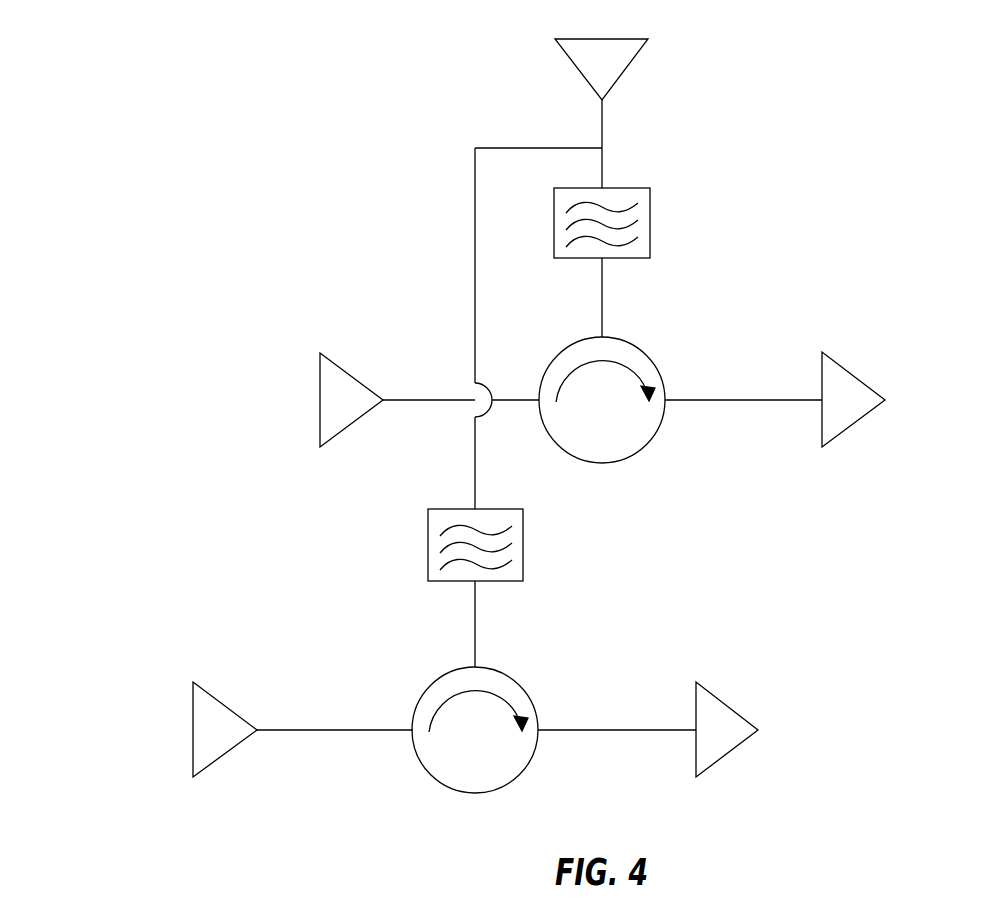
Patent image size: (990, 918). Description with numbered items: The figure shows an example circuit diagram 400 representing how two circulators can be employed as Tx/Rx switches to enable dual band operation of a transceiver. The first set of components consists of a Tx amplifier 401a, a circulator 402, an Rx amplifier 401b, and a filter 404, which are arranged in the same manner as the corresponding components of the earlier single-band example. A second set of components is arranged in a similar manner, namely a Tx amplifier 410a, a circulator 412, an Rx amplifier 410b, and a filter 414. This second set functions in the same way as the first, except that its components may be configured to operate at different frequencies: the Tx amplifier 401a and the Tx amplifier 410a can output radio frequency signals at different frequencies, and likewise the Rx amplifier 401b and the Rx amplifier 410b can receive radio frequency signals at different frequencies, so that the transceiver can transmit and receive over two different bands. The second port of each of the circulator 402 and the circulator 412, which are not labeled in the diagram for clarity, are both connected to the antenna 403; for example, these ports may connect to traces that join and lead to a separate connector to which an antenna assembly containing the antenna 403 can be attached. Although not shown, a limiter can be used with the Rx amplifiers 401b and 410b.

The circuit diagram 400 is at (294, 174).
The Tx amplifier 401a is at (318, 380).
The Rx amplifier 401b is at (855, 370).
The circulator 402 is at (653, 440).
The antenna 403 is at (630, 70).
The filter 404 is at (650, 207).
The Tx amplifier 410a is at (192, 711).
The Rx amplifier 410b is at (737, 748).
The circulator 412 is at (531, 757).
The filter 414 is at (523, 540).